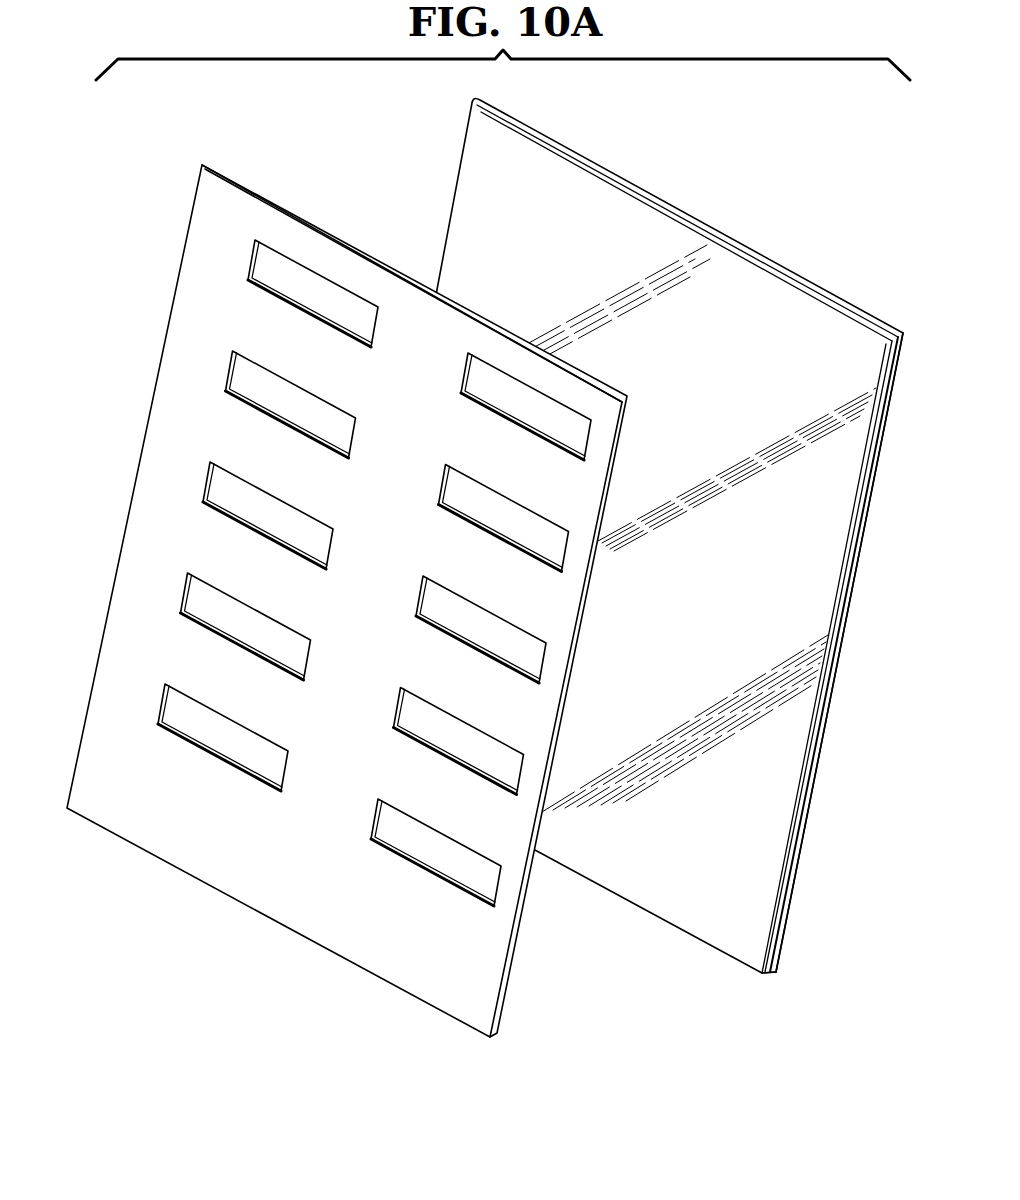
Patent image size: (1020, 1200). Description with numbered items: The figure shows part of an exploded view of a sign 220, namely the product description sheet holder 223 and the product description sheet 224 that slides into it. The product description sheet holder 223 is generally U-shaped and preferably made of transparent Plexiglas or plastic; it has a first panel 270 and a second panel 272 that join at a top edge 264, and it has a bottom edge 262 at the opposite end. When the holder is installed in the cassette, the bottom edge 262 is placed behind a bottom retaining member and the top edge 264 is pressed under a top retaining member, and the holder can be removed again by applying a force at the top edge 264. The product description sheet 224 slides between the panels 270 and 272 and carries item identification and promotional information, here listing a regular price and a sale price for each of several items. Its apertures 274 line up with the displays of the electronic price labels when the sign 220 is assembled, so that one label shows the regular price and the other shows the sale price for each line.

The sign 220 is at (162, 256).
The product description sheet holder 223 is at (731, 210).
The product description sheet 224 is at (290, 200).
The bottom edge 262 is at (763, 975).
The top edge 264 is at (791, 267).
The first panel 270 is at (776, 903).
The second panel 272 is at (786, 921).
The apertures 274 is at (419, 597).